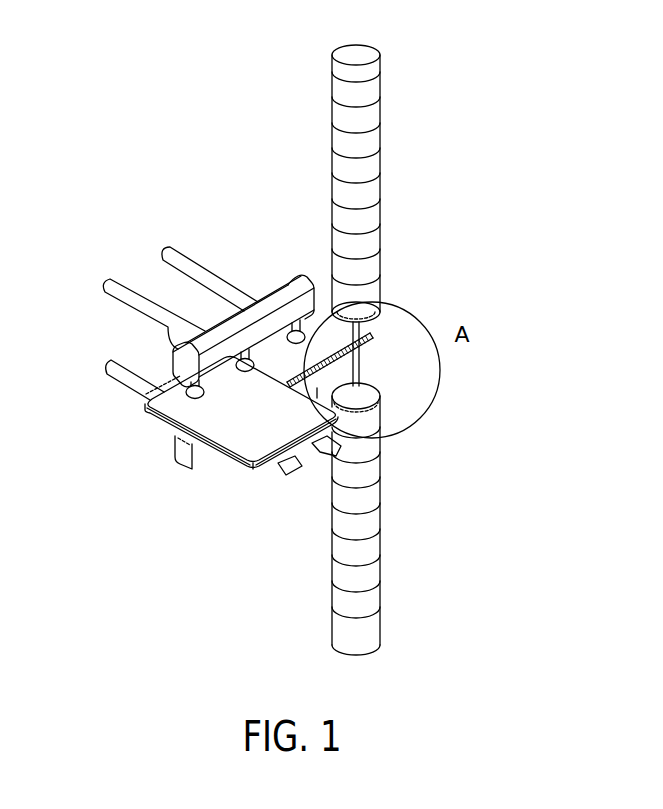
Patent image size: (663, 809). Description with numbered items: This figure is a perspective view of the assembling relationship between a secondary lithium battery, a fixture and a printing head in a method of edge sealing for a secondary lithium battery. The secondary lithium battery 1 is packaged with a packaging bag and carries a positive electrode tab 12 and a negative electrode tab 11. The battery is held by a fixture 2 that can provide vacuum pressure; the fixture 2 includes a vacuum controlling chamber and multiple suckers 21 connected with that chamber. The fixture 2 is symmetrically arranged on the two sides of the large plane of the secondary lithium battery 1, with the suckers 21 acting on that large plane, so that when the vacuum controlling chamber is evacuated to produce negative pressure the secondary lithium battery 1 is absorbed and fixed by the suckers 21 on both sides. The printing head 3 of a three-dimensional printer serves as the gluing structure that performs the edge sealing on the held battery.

The secondary lithium battery 1 is at (247, 413).
The negative electrode tab 11 is at (288, 472).
The positive electrode tab 12 is at (323, 443).
The fixture 2 is at (255, 312).
The suckers 21 is at (158, 396).
The printing head 3 is at (367, 193).